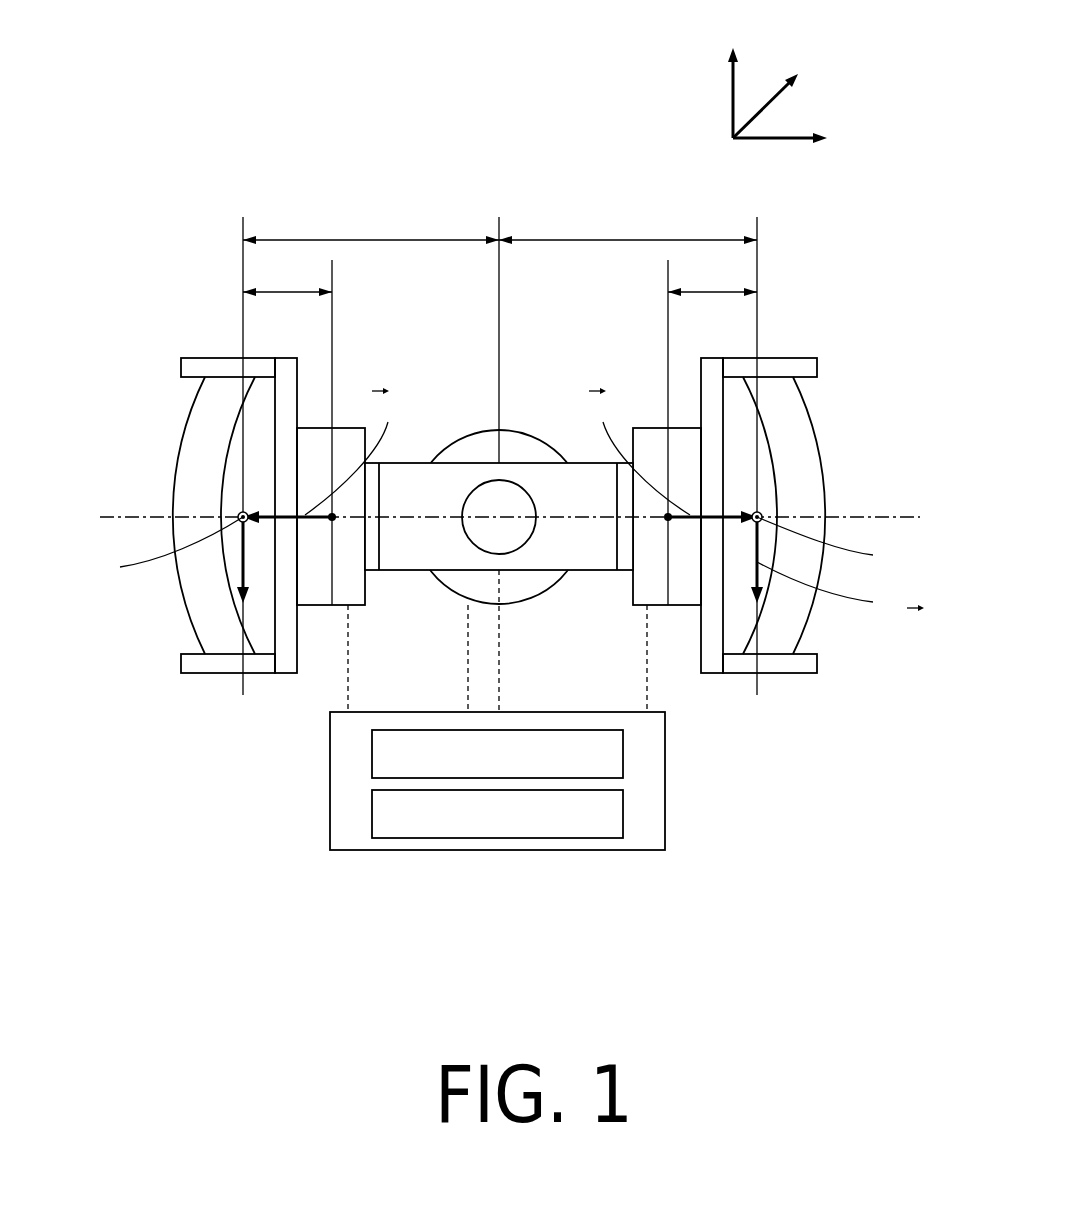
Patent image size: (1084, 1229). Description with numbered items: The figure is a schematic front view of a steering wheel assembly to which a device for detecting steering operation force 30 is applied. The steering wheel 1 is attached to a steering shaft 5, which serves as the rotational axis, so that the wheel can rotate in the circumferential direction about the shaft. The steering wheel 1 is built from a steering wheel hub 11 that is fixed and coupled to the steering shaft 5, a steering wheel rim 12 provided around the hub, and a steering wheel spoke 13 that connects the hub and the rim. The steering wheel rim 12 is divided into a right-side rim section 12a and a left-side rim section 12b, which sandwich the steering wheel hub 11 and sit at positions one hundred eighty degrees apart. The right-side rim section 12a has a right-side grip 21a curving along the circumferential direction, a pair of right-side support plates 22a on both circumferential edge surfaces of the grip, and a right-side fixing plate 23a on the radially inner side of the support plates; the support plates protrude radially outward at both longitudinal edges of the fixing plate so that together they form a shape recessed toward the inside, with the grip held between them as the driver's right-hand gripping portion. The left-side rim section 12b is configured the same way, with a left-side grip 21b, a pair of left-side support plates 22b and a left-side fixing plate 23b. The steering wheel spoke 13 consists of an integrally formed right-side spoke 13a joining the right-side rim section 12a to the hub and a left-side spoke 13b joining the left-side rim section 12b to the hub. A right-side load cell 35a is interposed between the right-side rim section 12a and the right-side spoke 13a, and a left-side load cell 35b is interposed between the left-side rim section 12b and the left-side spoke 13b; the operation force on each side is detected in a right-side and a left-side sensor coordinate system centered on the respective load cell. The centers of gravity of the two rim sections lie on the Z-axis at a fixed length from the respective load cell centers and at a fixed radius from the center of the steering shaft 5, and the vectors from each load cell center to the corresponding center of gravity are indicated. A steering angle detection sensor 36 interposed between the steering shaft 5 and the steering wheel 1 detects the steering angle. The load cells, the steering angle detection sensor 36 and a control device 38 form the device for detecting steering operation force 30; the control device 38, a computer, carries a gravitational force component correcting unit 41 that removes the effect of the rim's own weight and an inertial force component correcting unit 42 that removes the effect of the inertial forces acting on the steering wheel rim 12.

The steering wheel 1 is at (551, 160).
The steering shaft 5 is at (505, 426).
The steering wheel hub 11 is at (528, 541).
The steering wheel rim 12 is at (808, 321).
The right-side rim section 12a is at (826, 364).
The left-side rim section 12b is at (172, 364).
The steering wheel spoke 13 is at (421, 592).
The right-side spoke 13a is at (600, 573).
The left-side spoke 13b is at (393, 572).
The right-side grip 21a is at (808, 458).
The left-side grip 21b is at (190, 463).
The right-side support plates 22a is at (806, 380).
The left-side support plates 22b is at (190, 380).
The right-side fixing plate 23a is at (713, 675).
The left-side fixing plate 23b is at (290, 675).
The device for detecting steering operation force 30 is at (393, 917).
The right-side load cell 35a is at (680, 607).
The left-side load cell 35b is at (320, 607).
The steering angle detection sensor 36 is at (540, 578).
The control device 38 is at (578, 852).
The gravitational force component correcting unit 41 is at (623, 752).
The inertial force component correcting unit 42 is at (623, 810).